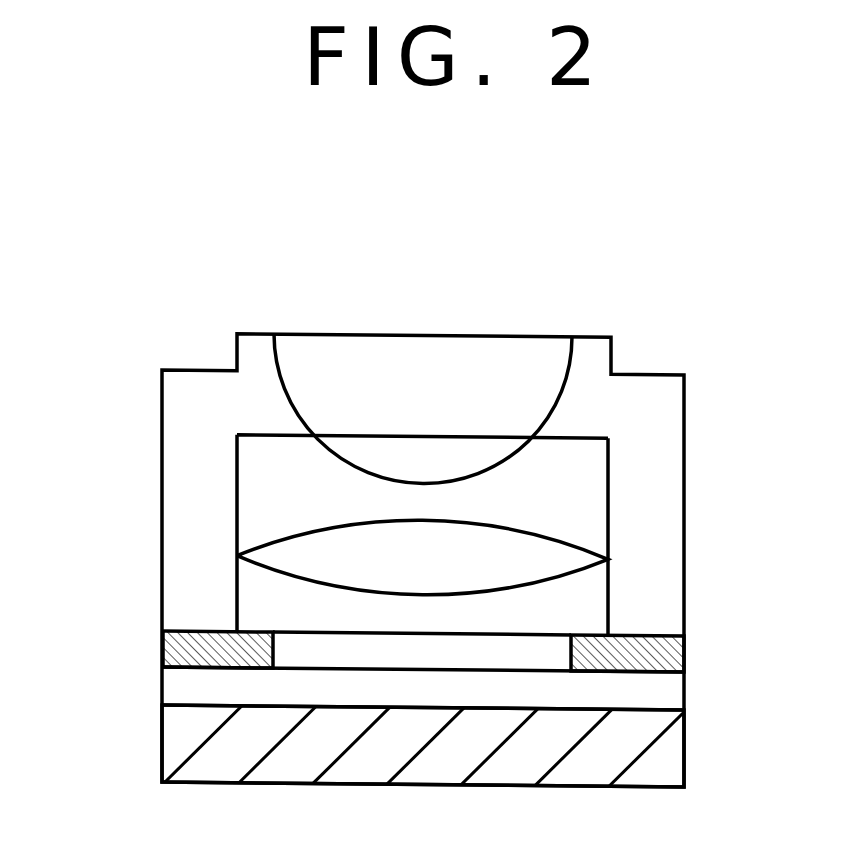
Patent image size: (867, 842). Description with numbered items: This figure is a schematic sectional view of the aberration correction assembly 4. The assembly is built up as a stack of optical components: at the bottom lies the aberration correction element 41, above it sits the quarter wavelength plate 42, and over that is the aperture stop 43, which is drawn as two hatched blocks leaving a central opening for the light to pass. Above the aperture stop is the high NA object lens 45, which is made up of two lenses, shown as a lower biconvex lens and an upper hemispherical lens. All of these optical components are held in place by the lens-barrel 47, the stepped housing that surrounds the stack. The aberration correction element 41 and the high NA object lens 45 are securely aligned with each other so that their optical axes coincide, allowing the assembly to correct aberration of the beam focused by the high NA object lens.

The aberration correction assembly 4 is at (440, 260).
The aberration correction element 41 is at (158, 743).
The quarter wavelength plate 42 is at (158, 683).
The aperture stop 43 is at (684, 655).
The high NA object lens 45 is at (553, 538).
The lens-barrel 47 is at (158, 640).